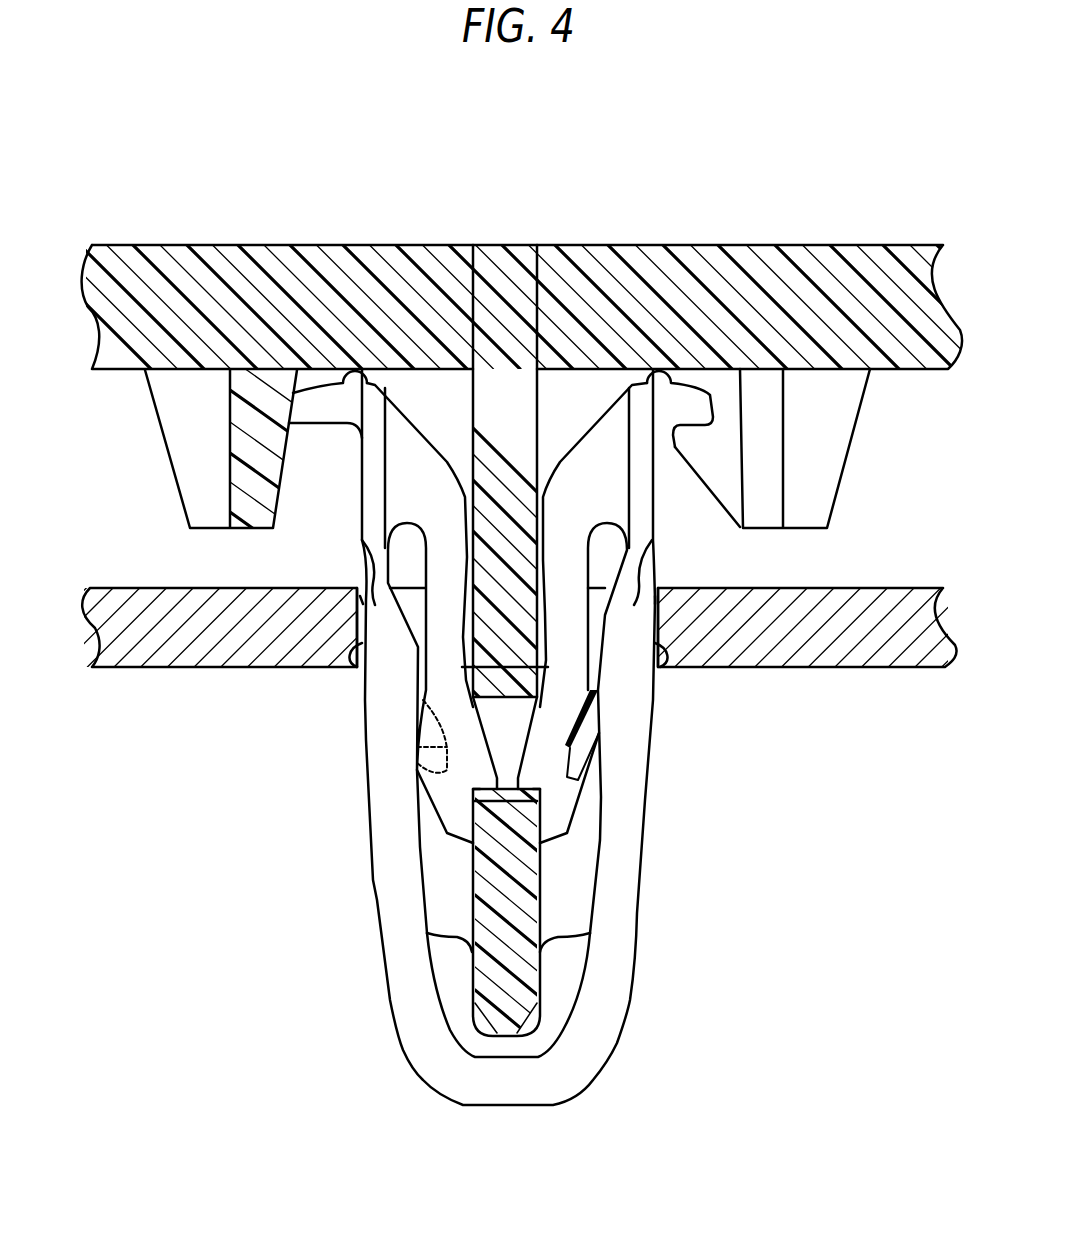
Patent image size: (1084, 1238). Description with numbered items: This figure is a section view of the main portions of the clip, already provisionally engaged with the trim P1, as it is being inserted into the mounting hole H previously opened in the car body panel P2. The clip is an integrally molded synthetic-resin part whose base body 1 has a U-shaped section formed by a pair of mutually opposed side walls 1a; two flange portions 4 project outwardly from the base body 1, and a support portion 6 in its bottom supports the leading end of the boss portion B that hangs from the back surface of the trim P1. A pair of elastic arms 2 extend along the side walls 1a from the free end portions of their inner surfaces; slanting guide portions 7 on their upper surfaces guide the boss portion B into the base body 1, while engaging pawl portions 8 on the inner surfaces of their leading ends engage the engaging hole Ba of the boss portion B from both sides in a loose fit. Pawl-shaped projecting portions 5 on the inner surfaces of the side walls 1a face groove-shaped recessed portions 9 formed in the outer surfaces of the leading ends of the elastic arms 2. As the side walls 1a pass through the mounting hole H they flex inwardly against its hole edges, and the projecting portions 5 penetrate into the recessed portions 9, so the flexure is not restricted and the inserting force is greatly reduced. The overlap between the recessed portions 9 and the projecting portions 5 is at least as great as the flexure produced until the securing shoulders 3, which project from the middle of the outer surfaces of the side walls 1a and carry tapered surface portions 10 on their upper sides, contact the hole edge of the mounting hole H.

The base body 1 is at (736, 963).
The side walls 1a is at (393, 928).
The elastic arms 2 is at (440, 547).
The securing shoulders 3 is at (340, 655).
The flange portions 4 is at (313, 407).
The projecting portions 5 is at (593, 737).
The support portion 6 is at (567, 960).
The guide portions 7 is at (398, 416).
The engaging pawl portions 8 is at (473, 780).
The recessed portions 9 is at (417, 760).
The tapered surface portions 10 is at (360, 600).
The boss portion B is at (497, 430).
The engaging hole Ba is at (510, 713).
The mounting hole H is at (357, 603).
The trim P1 is at (165, 258).
The car body panel P2 is at (153, 650).